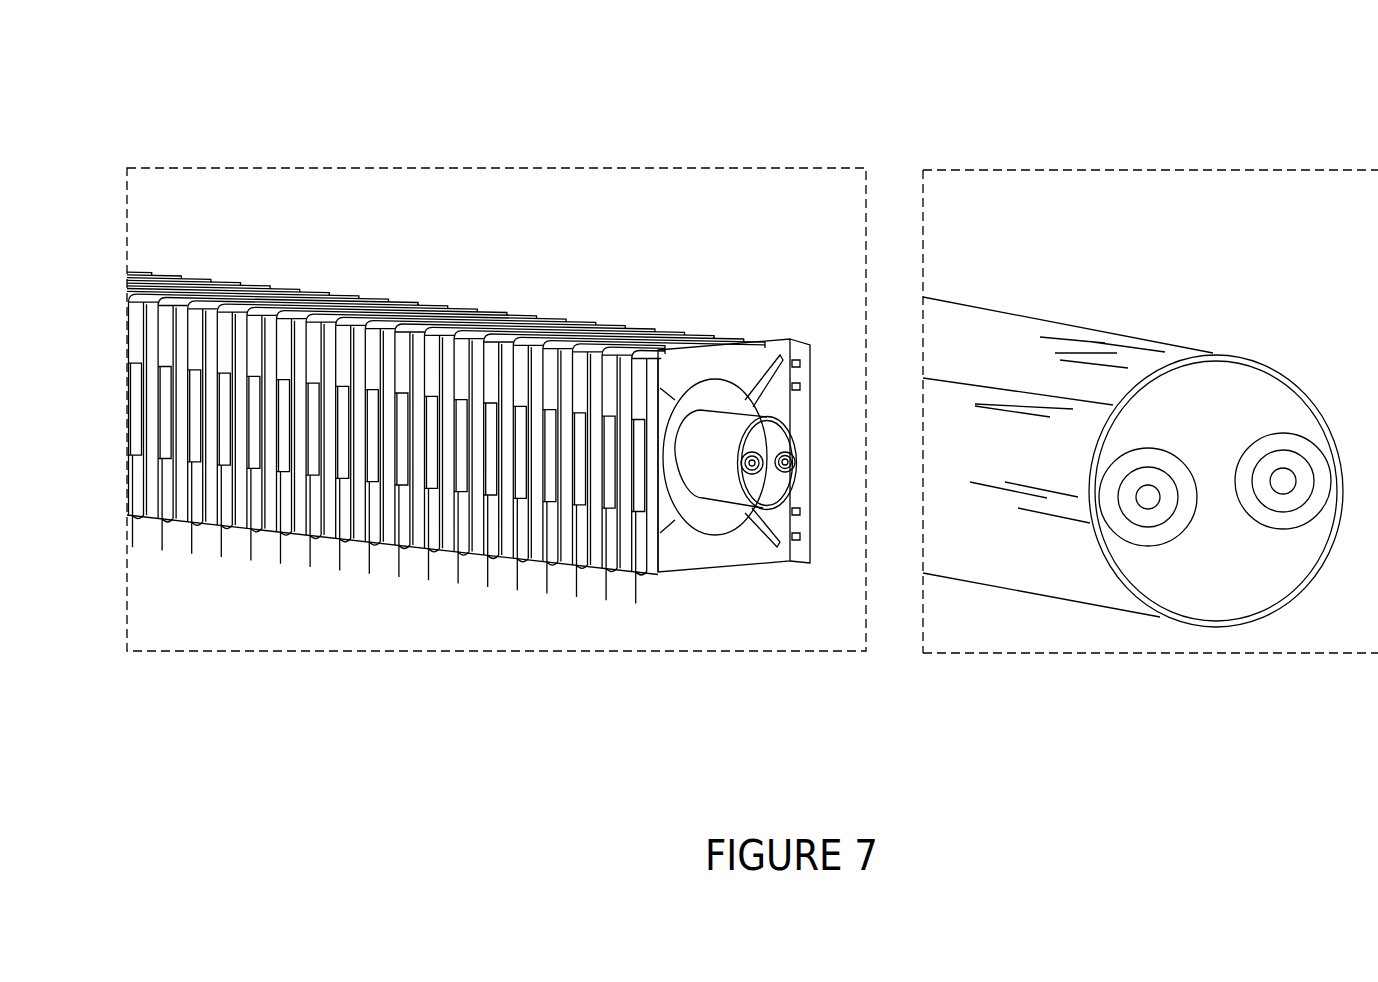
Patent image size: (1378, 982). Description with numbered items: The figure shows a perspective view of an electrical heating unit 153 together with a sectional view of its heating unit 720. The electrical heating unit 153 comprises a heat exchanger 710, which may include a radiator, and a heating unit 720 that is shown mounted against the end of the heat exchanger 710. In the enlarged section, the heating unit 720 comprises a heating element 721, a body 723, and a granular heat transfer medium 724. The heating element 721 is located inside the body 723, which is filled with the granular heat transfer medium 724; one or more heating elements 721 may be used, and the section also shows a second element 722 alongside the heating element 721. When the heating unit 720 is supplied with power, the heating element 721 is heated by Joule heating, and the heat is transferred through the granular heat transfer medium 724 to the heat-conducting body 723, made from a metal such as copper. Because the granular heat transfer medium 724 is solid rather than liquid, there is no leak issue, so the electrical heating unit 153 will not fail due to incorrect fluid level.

The electrical heating unit 153 is at (457, 147).
The heat exchanger 710 is at (352, 542).
The heating unit 720 is at (747, 443).
The heating element 721 is at (1285, 487).
The second conductor 722 is at (1150, 498).
The body 723 is at (1053, 367).
The granular heat transfer medium 724 is at (1240, 407).